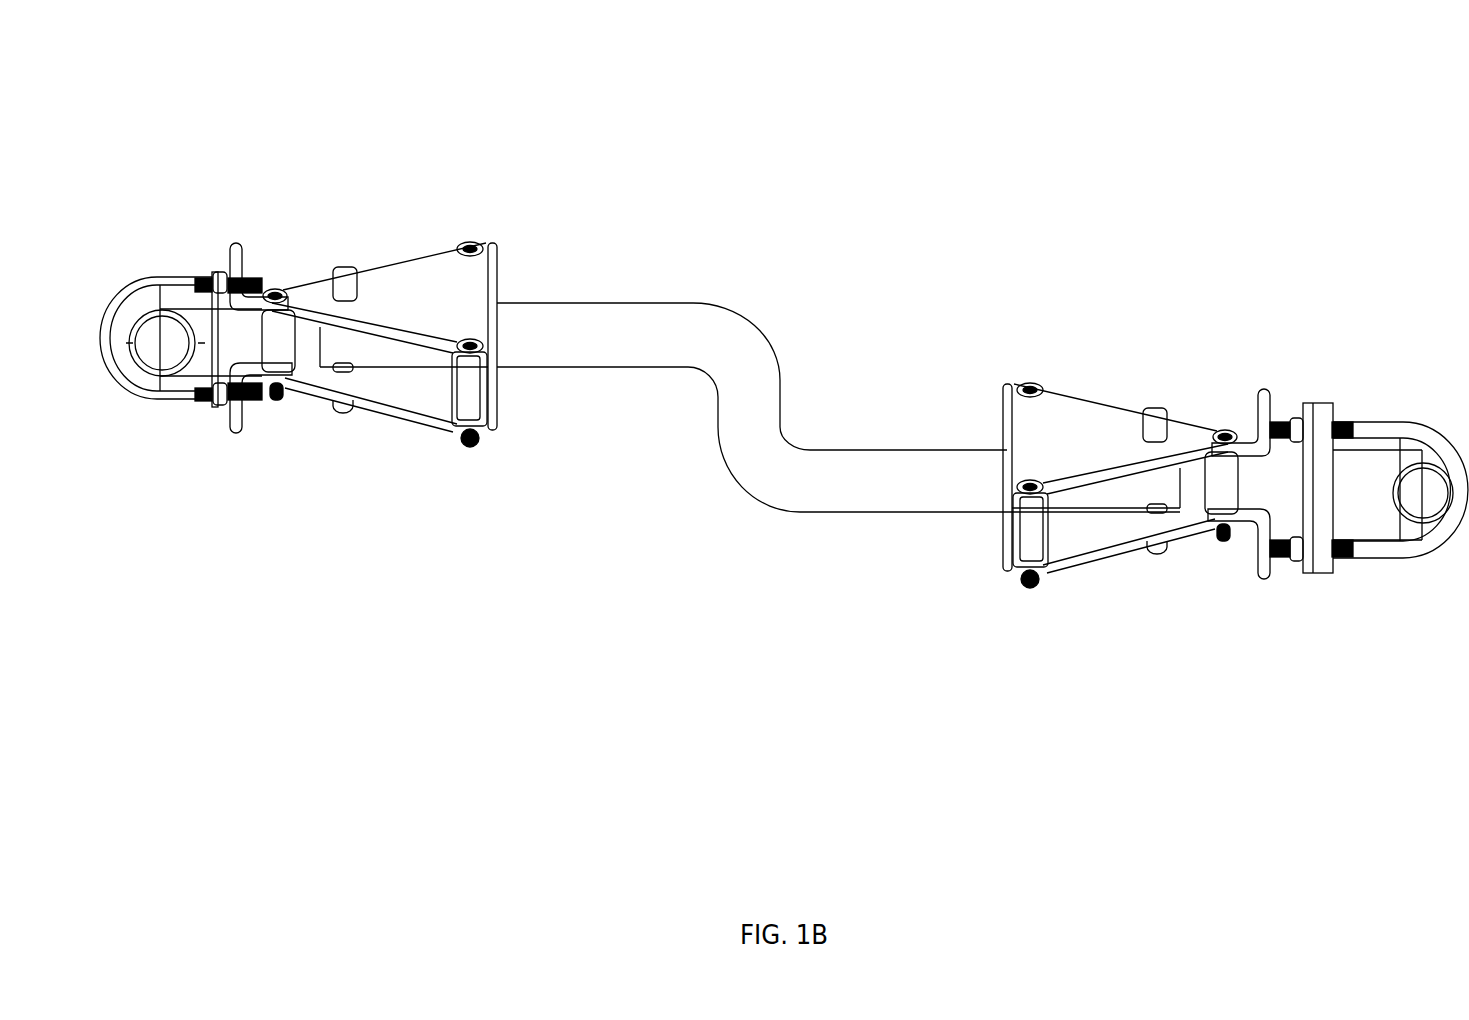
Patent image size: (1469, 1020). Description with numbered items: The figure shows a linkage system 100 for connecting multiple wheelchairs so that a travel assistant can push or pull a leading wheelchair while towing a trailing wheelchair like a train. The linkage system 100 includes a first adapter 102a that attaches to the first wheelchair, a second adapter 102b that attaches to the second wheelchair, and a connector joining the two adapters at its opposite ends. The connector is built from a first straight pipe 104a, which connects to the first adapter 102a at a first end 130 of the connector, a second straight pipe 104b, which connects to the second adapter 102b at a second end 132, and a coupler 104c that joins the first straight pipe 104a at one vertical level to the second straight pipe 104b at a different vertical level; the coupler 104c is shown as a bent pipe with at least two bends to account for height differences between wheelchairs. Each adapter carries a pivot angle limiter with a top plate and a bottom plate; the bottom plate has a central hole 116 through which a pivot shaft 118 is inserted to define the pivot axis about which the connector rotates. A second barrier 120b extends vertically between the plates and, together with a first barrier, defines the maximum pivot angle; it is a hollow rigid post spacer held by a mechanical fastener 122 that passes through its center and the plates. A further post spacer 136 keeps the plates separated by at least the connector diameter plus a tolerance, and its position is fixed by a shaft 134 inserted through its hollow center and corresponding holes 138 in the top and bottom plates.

The linkage system 100 is at (197, 126).
The first adapter 102a is at (514, 195).
The second adapter 102b is at (1016, 350).
The first straight pipe 104a is at (597, 302).
The second straight pipe 104b is at (869, 447).
The coupler 104c is at (748, 323).
The central hole 116 is at (358, 298).
The pivot shaft 118 is at (343, 266).
The second barrier 120b is at (467, 396).
The mechanical fastener 122 is at (480, 440).
The first end 130 is at (317, 381).
The second end 132 is at (1182, 528).
The shaft 134 is at (273, 289).
The post spacer 136 is at (270, 348).
The holes 138 is at (305, 303).